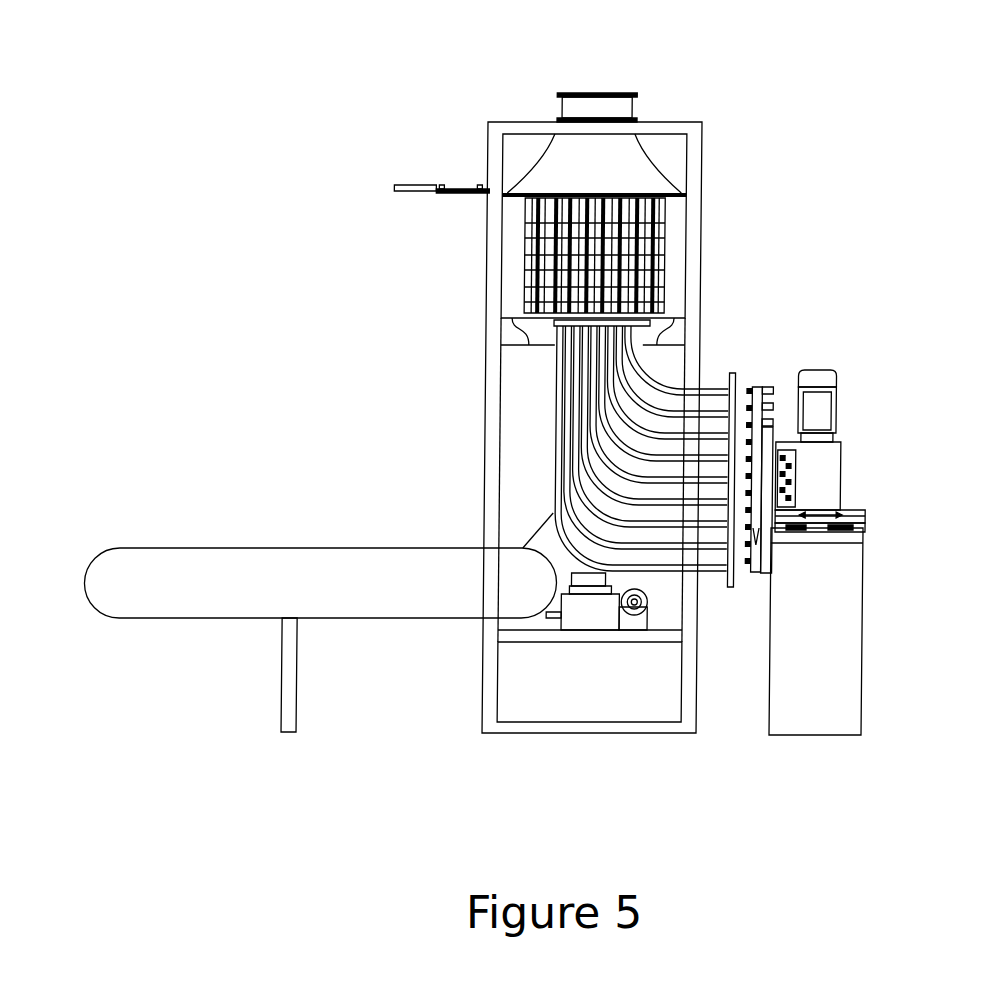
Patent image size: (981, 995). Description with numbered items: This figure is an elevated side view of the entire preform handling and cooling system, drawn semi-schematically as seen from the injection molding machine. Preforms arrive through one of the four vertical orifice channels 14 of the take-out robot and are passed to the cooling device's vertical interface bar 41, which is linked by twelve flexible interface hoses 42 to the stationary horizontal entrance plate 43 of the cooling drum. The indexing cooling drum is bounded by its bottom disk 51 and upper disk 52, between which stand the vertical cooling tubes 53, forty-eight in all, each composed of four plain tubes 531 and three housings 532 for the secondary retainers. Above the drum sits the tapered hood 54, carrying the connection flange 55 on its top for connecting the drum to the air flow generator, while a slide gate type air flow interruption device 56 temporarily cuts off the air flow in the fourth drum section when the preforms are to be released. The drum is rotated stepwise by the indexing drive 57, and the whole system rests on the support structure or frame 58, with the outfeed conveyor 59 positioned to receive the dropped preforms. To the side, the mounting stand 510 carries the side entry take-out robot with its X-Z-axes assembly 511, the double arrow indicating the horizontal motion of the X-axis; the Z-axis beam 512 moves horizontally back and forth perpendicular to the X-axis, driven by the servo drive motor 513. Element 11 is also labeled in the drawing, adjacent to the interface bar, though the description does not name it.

The fastening nuts 11 is at (770, 421).
The vertical orifice channel 14 is at (761, 428).
The vertical interface bar 41 is at (736, 407).
The flexible interface hoses 42 is at (709, 390).
The stationary horizontal entrance plate 43 is at (689, 314).
The bottom disk of the indexing cooling drum 51 is at (614, 318).
The upper disk of the indexing cooling drum 52 is at (688, 192).
The vertical cooling tubes 53 is at (657, 247).
The tapered hood 54 is at (635, 175).
The connection flange 55 is at (622, 93).
The slide gate type air flow interruption device 56 is at (440, 187).
The indexing drive 57 is at (592, 615).
The support structure or frame 58 is at (692, 727).
The outfeed conveyor 59 is at (196, 587).
The mounting stand 510 is at (838, 640).
The X-Z-axes assembly 511 is at (841, 510).
The Z-axis beam 512 is at (789, 467).
The servo drive motor 513 is at (820, 422).
The plain tubes 531 is at (533, 278).
The housings for secondary retainers 532 is at (533, 229).